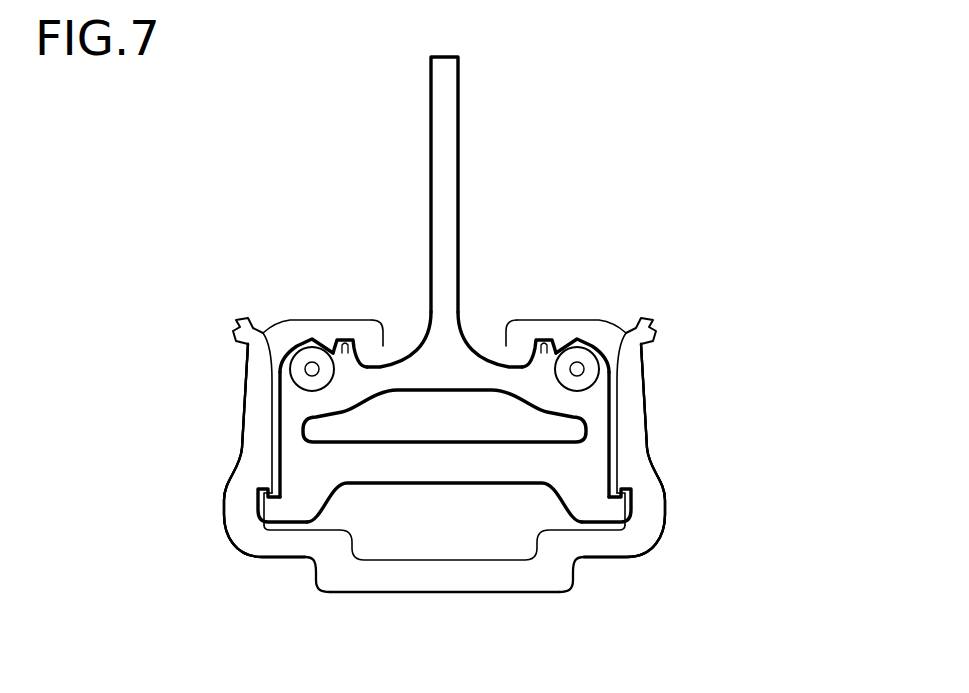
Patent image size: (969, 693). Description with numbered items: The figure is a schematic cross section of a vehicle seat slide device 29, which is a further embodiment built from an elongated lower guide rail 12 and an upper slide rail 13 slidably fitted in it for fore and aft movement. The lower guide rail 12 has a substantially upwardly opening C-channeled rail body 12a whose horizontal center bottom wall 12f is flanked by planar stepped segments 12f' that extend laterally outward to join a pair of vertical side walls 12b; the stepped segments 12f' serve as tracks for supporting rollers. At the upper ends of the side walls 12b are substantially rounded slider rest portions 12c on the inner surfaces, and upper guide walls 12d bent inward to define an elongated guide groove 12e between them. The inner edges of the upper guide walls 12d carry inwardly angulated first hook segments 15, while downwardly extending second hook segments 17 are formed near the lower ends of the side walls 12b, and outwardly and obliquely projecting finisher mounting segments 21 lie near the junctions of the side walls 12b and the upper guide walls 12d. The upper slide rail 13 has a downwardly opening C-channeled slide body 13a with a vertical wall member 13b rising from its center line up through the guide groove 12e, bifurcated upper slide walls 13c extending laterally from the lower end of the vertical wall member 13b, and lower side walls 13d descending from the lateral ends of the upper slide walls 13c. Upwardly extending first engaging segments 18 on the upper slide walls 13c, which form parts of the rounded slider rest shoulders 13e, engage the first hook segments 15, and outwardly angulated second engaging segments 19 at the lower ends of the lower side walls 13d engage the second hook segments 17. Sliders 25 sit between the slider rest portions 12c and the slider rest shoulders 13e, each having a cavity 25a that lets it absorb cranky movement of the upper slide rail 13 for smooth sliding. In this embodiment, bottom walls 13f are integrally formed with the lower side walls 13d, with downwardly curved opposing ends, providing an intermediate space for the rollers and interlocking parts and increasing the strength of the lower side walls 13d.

The lower guide rail 12 is at (672, 518).
The rail body 12a is at (655, 455).
The vertical side walls 12b is at (630, 392).
The slider rest portions 12c is at (287, 323).
The upper guide walls 12d is at (293, 323).
The guide groove 12e is at (482, 333).
The bottom wall 12f is at (461, 629).
The planar stepped segments 12f' is at (479, 592).
The upper slide rail 13 is at (466, 132).
The slide body 13a is at (473, 485).
The vertical wall member 13b is at (447, 100).
The upper slide walls 13c is at (397, 372).
The lower side walls 13d is at (440, 300).
The slider rest shoulders 13e is at (280, 384).
The bottom walls 13f is at (408, 460).
The first hook segments 15 is at (383, 337).
The second hook segments 17 is at (260, 480).
The first engaging segments 18 is at (347, 347).
The second engaging segments 19 is at (255, 508).
The finisher mounting segments 21 is at (235, 325).
The sliders 25 is at (300, 362).
The cavity 25a is at (310, 370).
The seat slide device 29 is at (658, 172).